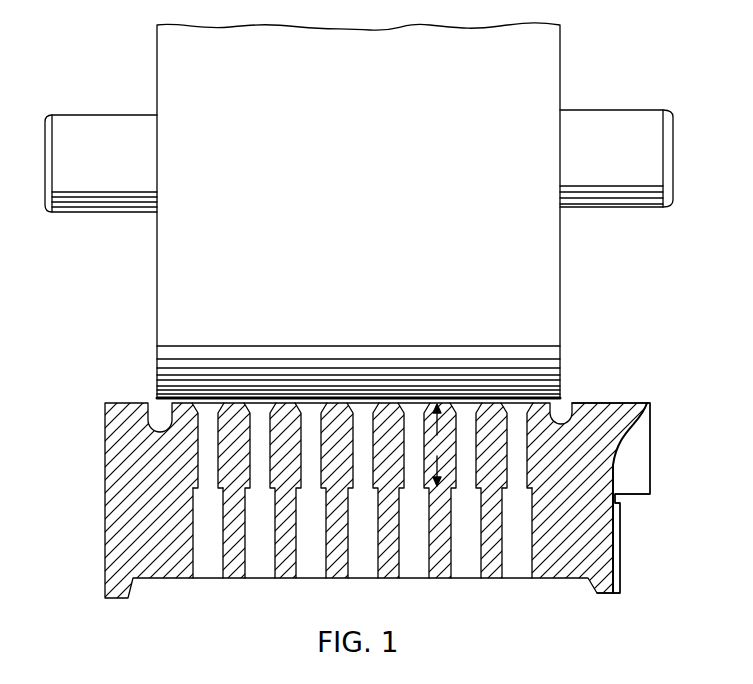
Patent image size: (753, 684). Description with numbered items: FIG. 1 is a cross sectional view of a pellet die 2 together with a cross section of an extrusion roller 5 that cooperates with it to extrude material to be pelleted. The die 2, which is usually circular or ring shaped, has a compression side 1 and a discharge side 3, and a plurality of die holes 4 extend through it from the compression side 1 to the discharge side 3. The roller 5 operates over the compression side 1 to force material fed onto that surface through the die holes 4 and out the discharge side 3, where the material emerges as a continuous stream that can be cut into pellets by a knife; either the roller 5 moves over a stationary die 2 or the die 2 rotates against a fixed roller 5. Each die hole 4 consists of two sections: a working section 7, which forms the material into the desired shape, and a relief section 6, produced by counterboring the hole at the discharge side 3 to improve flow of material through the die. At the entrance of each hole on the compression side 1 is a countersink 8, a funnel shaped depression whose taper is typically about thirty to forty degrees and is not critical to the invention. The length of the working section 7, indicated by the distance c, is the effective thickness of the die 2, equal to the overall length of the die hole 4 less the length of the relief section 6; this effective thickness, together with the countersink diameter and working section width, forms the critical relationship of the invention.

The compression side 1 is at (542, 397).
The pellet die 2 is at (651, 468).
The discharge side 3 is at (545, 578).
The die holes 4 is at (197, 456).
The roller 5 is at (157, 302).
The relief section 6 is at (194, 531).
The working section 7 is at (258, 461).
The countersink 8 is at (243, 407).
The effective thickness distance c is at (435, 445).